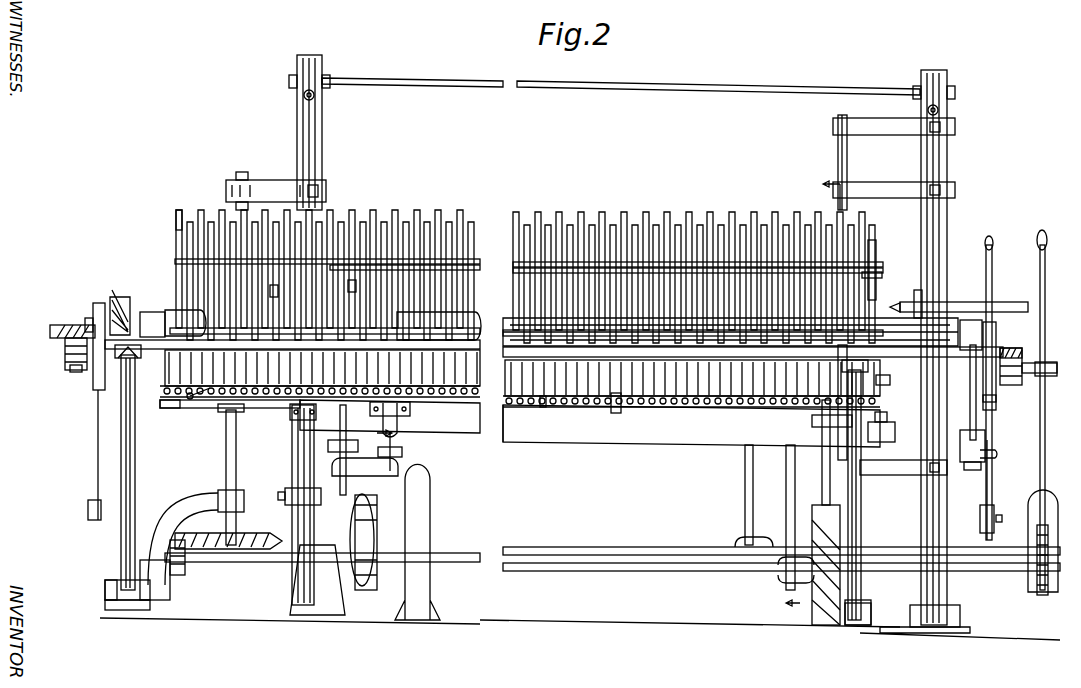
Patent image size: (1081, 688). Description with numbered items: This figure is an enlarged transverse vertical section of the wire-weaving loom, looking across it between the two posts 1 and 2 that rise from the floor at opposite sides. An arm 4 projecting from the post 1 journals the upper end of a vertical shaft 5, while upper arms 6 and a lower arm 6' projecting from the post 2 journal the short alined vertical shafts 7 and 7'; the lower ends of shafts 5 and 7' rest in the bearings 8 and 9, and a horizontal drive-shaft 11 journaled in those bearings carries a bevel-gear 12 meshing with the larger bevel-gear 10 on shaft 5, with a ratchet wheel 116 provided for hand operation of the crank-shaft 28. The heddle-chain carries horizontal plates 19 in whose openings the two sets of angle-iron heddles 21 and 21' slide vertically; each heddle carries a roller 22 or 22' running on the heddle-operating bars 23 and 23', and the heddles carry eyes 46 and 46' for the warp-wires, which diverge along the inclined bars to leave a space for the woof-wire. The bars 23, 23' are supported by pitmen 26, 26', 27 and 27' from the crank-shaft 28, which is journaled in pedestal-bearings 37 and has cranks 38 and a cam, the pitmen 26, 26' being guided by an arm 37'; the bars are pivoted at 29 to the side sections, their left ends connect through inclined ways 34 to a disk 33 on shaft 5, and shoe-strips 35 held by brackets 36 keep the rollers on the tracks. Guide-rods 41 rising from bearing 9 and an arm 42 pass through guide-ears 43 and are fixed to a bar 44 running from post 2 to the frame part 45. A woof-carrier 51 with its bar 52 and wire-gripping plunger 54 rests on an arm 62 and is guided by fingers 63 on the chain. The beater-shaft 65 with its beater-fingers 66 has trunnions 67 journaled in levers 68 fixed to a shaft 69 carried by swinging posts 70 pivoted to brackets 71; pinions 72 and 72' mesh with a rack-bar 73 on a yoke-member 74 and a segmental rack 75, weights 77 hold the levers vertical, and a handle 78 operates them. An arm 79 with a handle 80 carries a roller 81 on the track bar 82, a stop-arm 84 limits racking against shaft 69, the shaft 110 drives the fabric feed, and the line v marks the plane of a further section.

The post 1 is at (323, 142).
The post 2 is at (947, 165).
The arm 4 is at (270, 185).
The vertical shaft 5 is at (237, 452).
The upper arm 6 is at (894, 158).
The lower arm 6' is at (903, 471).
The vertical shaft 7 is at (828, 162).
The vertical shaft 7' is at (862, 427).
The bearing 8 is at (160, 522).
The bearing 9 is at (826, 565).
The bevel-gear 10 is at (248, 536).
The drive-shaft 11 is at (586, 571).
The bevel-gear 12 is at (185, 570).
The plate 19 is at (880, 278).
The heddle 21 is at (526, 276).
The heddle 21' is at (344, 214).
The roller 22 is at (520, 389).
The roller 22' is at (330, 396).
The heddle-operating bar 23 is at (590, 434).
The heddle-operating bar 23' is at (491, 420).
The pitman 26 is at (394, 436).
The pitman 26' is at (349, 450).
The pitman 27 is at (781, 517).
The pitman 27' is at (732, 495).
The crank-shaft 28 is at (555, 547).
The pivotal connection 29 is at (890, 432).
The disk 33 is at (172, 400).
The inclined way 34 is at (195, 400).
The shoe-strip 35 is at (548, 408).
The bracket 36 is at (622, 412).
The pedestal-bearing 37 is at (423, 542).
The arm 37' is at (365, 479).
The crank 38 is at (738, 543).
The guide-rod 41 is at (292, 460).
The arm 42 is at (284, 496).
The guide-ear 43 is at (290, 414).
The bar 44 is at (478, 345).
The frame part 45 is at (860, 436).
The aperture 46 is at (606, 290).
The aperture 46' is at (529, 276).
The woof-carrier 51 is at (907, 304).
The bar 52 is at (962, 304).
The wire-gripping plunger 54 is at (363, 542).
The arm 62 is at (925, 302).
The guide finger 63 is at (352, 290).
The beater-shaft 65 is at (546, 320).
The beater-finger 66 is at (705, 290).
The trunnion 67 is at (95, 310).
The lever 68 is at (92, 320).
The shaft 69 is at (725, 400).
The swinging post 70 is at (136, 470).
The bracket 71 is at (108, 598).
The pinion 72 is at (1028, 381).
The pinion 72' is at (58, 354).
The rack-bar 73 is at (50, 332).
The yoke-member 74 is at (75, 372).
The segmental rack 75 is at (1022, 353).
The weight 77 is at (88, 506).
The operating-handle 78 is at (993, 286).
The arm 79 is at (977, 430).
The handle 80 is at (996, 455).
The roller 81 is at (966, 464).
The bar 82 is at (980, 469).
The stop-arm 84 is at (906, 380).
The shaft 110 is at (1045, 440).
The ratchet wheel 116 is at (1040, 592).
The section line v is at (608, 396).